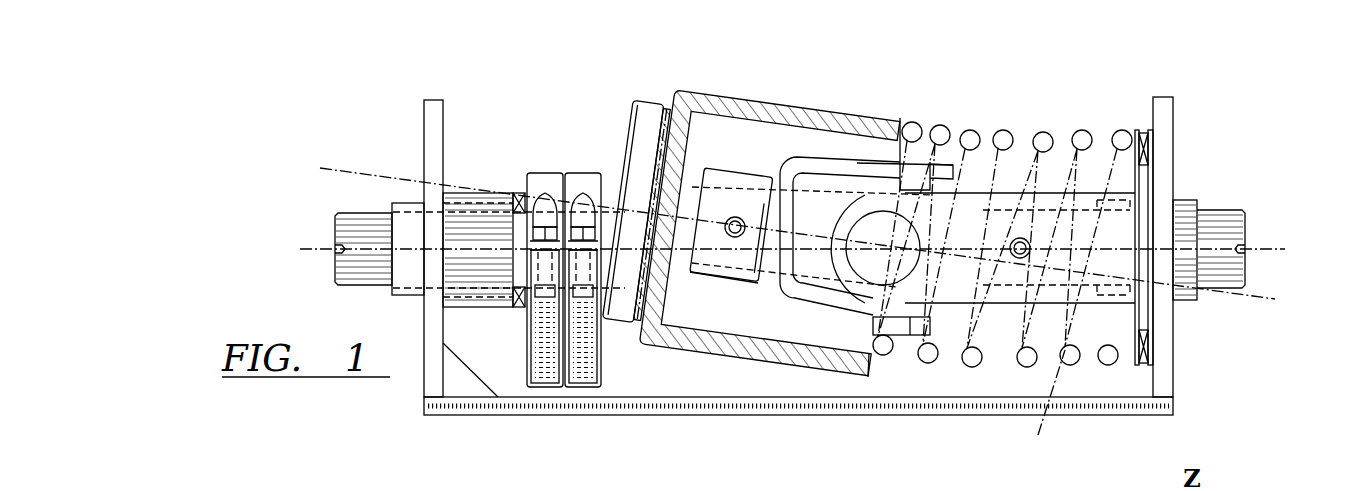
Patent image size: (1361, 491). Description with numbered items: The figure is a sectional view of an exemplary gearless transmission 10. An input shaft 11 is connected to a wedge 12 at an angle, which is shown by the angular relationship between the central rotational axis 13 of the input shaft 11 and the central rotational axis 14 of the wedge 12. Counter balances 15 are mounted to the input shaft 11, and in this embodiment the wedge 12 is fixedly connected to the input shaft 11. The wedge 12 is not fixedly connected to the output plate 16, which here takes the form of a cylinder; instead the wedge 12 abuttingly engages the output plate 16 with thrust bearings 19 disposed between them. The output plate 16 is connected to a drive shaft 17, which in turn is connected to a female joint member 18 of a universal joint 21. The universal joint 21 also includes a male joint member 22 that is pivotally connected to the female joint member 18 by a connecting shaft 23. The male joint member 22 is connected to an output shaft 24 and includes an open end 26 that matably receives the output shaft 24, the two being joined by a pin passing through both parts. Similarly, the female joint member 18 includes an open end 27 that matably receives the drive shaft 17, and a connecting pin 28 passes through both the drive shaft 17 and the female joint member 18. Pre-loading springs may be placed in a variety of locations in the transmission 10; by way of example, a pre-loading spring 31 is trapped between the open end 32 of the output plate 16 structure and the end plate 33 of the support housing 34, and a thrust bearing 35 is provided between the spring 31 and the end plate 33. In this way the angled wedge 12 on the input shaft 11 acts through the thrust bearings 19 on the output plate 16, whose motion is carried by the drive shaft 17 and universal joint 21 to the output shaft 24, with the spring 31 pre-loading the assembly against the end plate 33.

The gearless transmission 10 is at (1202, 120).
The input shaft 11 is at (360, 238).
The wedge 12 is at (652, 122).
The central rotational axis 13 is at (310, 249).
The central rotational axis 14 is at (406, 182).
The counter balances 15 is at (578, 367).
The output plate 16 is at (686, 82).
The drive shaft 17 is at (697, 170).
The female joint member 18 is at (787, 148).
The thrust bearings 19 is at (650, 313).
The universal joint 21 is at (875, 147).
The male joint member 22 is at (860, 295).
The connecting shaft 23 is at (875, 265).
The output shaft 24 is at (1218, 225).
The open end 26 is at (1040, 406).
The open end 27 is at (700, 266).
The connecting pin 28 is at (735, 214).
The pre-loading spring 31 is at (1000, 128).
The open end 32 is at (868, 366).
The end plate 33 is at (1165, 363).
The support housing 34 is at (457, 422).
The thrust bearing 35 is at (1143, 130).